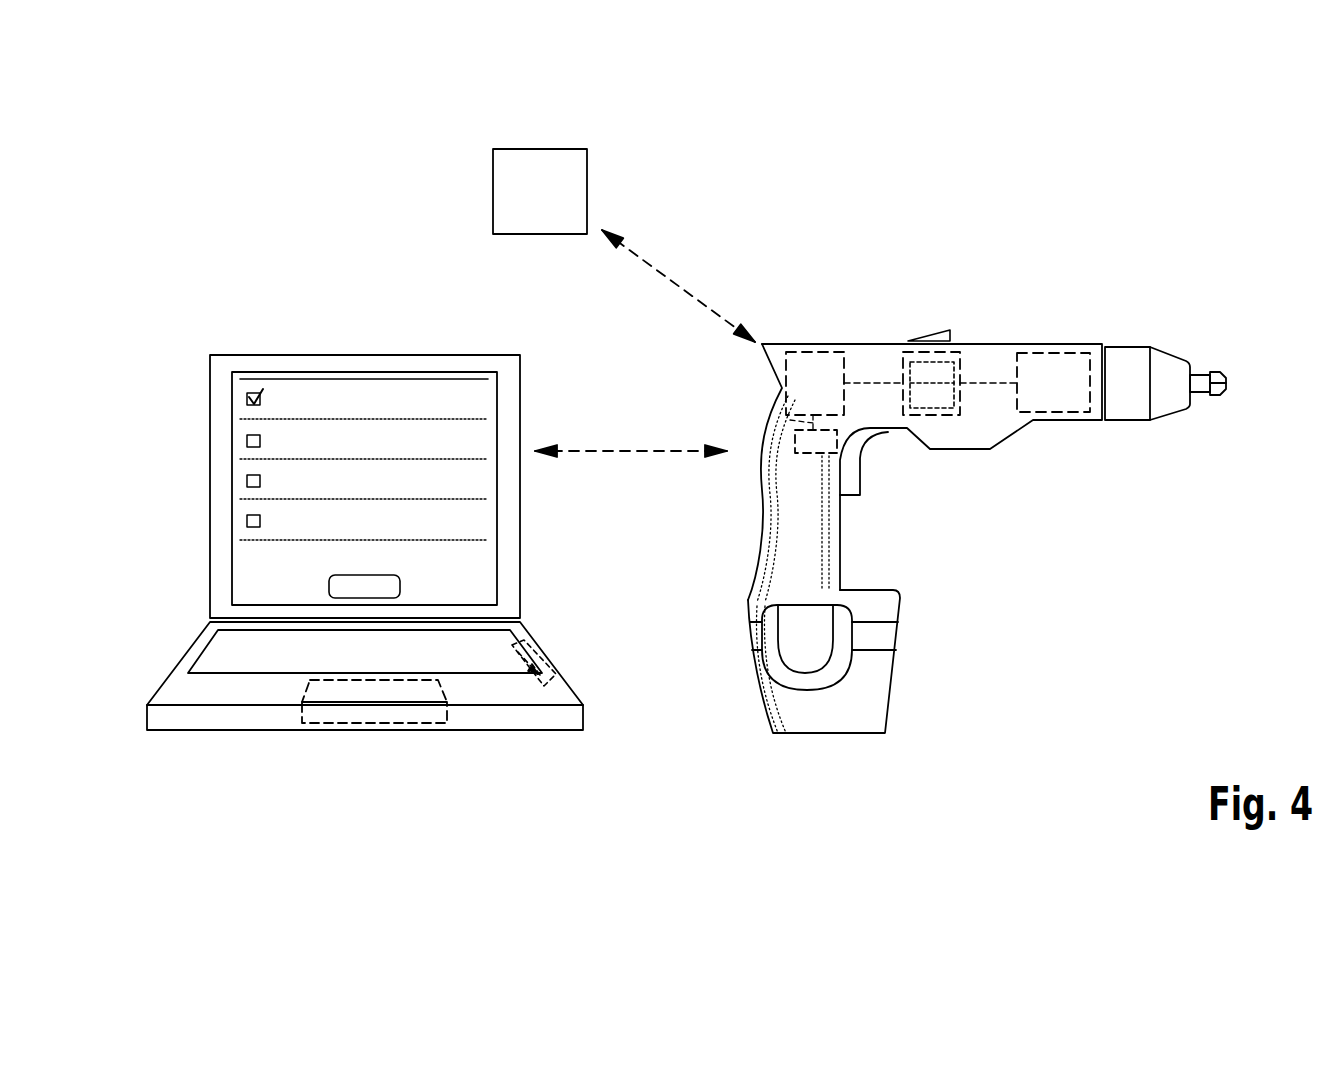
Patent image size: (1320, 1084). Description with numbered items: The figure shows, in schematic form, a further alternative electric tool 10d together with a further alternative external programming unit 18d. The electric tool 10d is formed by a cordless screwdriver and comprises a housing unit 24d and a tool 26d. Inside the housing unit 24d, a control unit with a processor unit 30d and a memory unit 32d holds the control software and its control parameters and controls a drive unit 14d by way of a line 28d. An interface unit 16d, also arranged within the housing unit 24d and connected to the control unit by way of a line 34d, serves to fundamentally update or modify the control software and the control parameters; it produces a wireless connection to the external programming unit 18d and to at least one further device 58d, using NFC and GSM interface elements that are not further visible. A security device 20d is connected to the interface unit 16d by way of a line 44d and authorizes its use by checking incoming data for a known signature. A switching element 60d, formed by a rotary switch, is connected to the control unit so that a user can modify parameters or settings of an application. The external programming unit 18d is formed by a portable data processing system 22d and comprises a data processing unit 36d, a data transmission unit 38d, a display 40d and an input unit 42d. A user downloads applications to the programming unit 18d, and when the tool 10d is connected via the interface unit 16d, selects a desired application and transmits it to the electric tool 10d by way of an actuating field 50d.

The electric tool 10d is at (974, 436).
The drive unit 14d is at (1068, 412).
The interface unit 16d is at (815, 352).
The external programming unit 18d is at (210, 757).
The security device 20d is at (797, 463).
The portable data processing system 22d is at (148, 757).
The housing unit 24d is at (1080, 352).
The tool 26d is at (1215, 372).
The line 28d is at (1002, 377).
The processor unit 30d is at (940, 412).
The memory unit 32d is at (953, 350).
The line 34d is at (873, 383).
The data processing unit 36d is at (390, 690).
The data transmission unit 38d is at (517, 648).
The display 40d is at (268, 348).
The input unit 42d is at (287, 652).
The line 44d is at (790, 420).
The actuating field 50d is at (340, 586).
The further device 58d is at (587, 190).
The switching element 60d is at (925, 338).